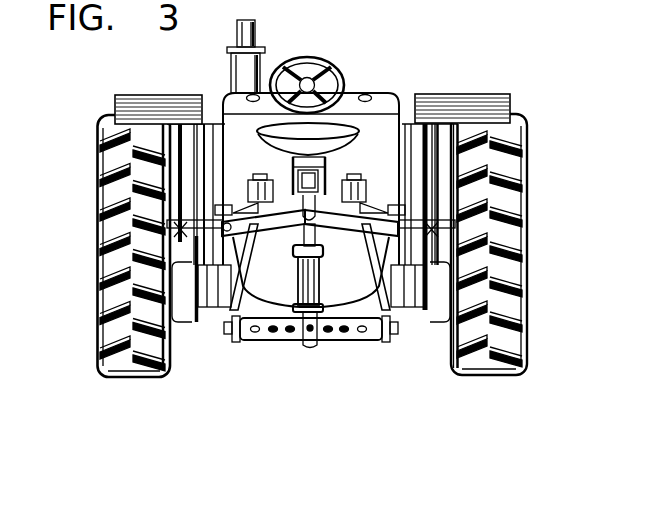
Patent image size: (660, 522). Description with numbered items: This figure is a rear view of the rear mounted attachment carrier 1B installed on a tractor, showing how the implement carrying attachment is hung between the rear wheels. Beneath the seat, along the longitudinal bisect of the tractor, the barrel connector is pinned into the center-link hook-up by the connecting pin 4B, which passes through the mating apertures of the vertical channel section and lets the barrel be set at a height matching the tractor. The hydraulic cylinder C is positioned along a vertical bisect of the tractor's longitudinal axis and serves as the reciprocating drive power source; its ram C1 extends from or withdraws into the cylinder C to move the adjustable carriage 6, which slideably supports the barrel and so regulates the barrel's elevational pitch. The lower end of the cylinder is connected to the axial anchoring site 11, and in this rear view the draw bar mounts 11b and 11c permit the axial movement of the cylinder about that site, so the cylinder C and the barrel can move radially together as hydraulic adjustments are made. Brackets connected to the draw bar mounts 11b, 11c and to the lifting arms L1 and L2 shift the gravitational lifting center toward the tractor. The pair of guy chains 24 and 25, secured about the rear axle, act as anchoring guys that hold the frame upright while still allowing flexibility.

The rear mounted attachment carrier 1B is at (250, 156).
The guy chain 24 is at (162, 187).
The guy chain 25 is at (425, 188).
The adjustable carriage 6 is at (292, 162).
The connecting pin 4B is at (331, 183).
The hydraulic cylinder C is at (297, 278).
The ram C1 is at (315, 236).
The lifting arm L1 is at (237, 296).
The lifting arm L2 is at (497, 266).
The axial anchoring site 11 is at (293, 343).
The draw bar mount 11b is at (240, 318).
The draw bar mount 11c is at (393, 323).